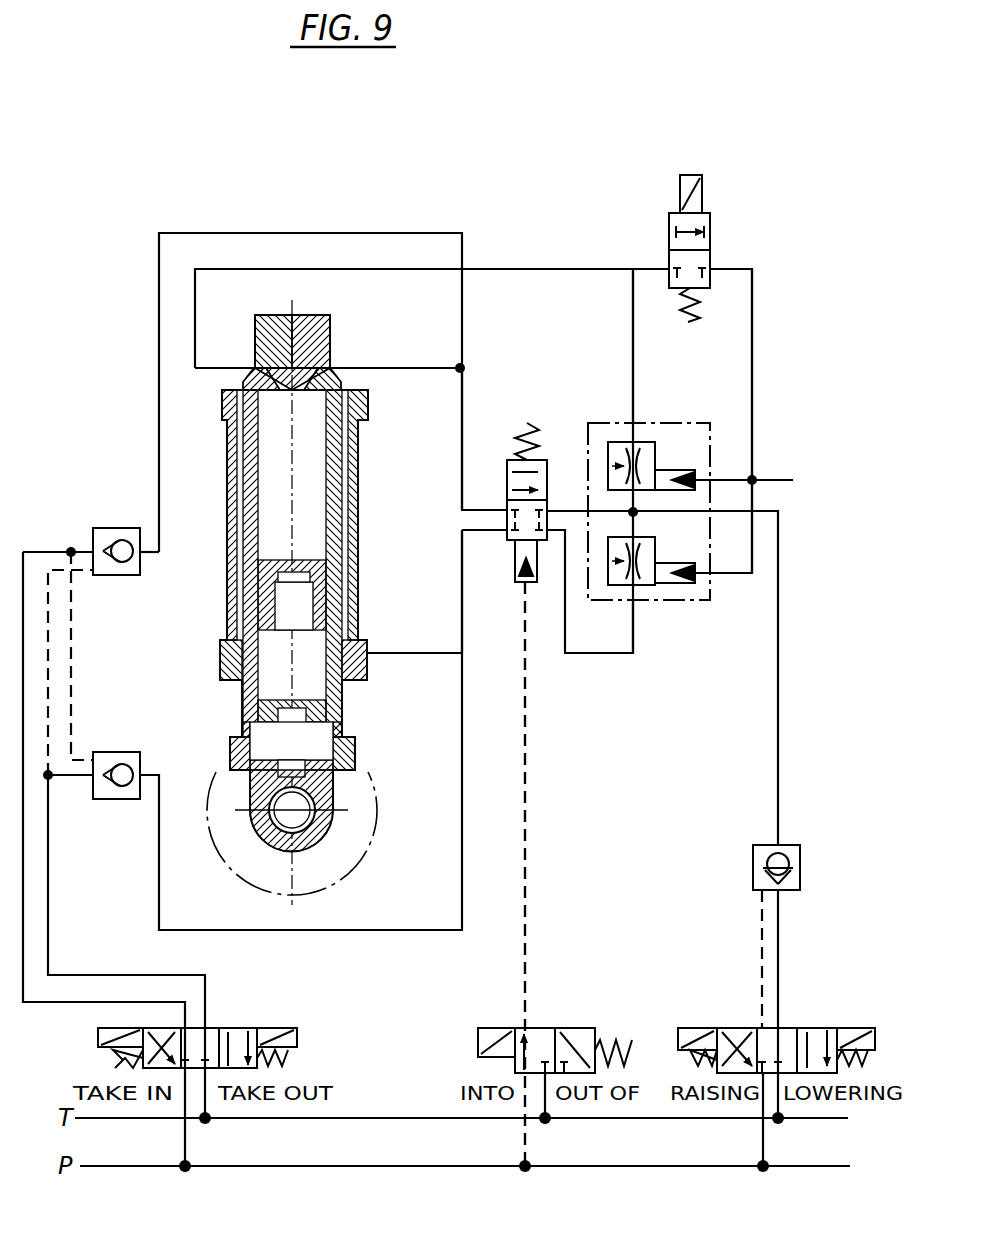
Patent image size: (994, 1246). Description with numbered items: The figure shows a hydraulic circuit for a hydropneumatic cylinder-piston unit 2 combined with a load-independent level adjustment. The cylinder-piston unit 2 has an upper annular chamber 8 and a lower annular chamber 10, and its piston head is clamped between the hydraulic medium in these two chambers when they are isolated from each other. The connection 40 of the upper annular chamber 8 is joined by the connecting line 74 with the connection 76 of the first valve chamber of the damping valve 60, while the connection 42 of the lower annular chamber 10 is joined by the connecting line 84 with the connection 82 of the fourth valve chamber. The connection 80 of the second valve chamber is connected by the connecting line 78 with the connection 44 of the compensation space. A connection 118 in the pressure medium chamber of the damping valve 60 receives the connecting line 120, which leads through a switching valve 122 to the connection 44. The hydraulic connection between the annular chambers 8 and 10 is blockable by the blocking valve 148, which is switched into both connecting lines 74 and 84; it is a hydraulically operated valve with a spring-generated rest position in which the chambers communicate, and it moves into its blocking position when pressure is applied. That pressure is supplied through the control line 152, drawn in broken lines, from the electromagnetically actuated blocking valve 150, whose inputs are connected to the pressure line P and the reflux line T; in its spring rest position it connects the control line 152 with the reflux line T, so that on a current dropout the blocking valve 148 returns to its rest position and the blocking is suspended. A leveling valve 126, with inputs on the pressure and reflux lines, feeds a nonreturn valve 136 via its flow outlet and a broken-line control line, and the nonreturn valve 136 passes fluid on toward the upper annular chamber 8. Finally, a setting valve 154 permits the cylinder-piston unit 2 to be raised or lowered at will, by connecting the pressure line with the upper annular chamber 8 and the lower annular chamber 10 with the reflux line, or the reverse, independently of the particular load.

The cylinder-piston unit 2 is at (293, 602).
The upper annular chamber 8 is at (245, 422).
The lower annular chamber 10 is at (243, 547).
The connection 40 is at (338, 376).
The connection 42 is at (365, 650).
The connection 44 is at (247, 380).
The damping valve 60 is at (700, 607).
The connecting line 74 is at (462, 433).
The connection 76 is at (633, 512).
The connecting line 78 is at (565, 269).
The connection 80 is at (633, 423).
The connection 82 is at (633, 600).
The connecting line 84 is at (462, 570).
The connection 118 is at (752, 480).
The connecting line 120 is at (752, 353).
The switching valve 122 is at (725, 243).
The leveling valve 126 is at (792, 1017).
The nonreturn valve 136 is at (790, 833).
The blocking valve 148 is at (503, 450).
The blocking valve 150 is at (553, 1020).
The control line 152 is at (525, 828).
The setting valve 154 is at (213, 1020).